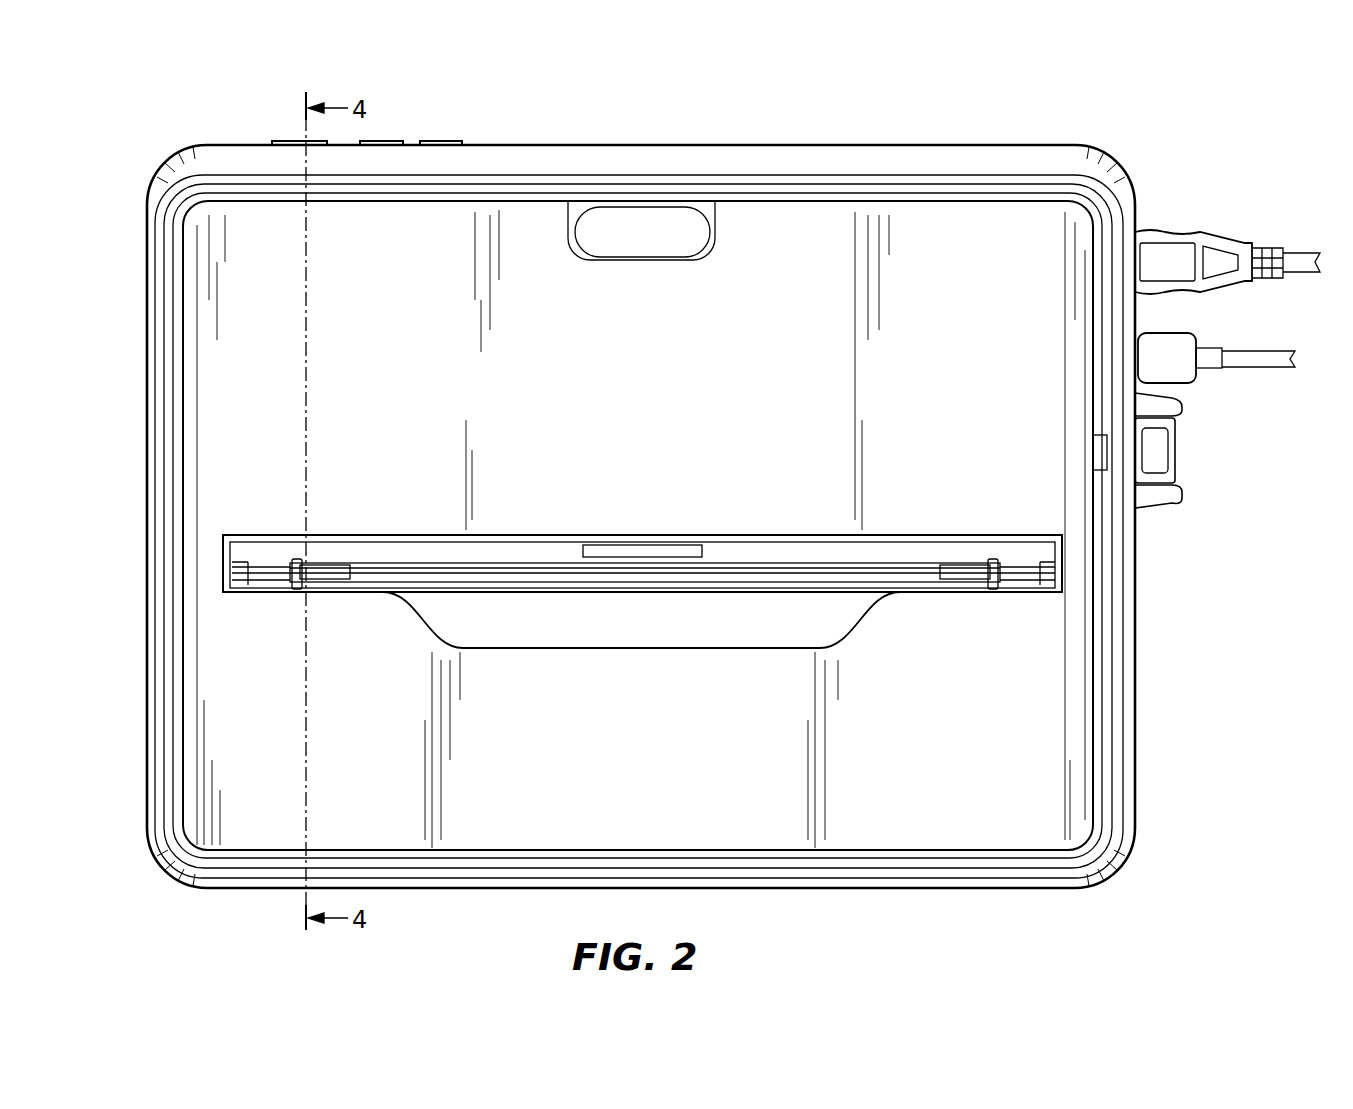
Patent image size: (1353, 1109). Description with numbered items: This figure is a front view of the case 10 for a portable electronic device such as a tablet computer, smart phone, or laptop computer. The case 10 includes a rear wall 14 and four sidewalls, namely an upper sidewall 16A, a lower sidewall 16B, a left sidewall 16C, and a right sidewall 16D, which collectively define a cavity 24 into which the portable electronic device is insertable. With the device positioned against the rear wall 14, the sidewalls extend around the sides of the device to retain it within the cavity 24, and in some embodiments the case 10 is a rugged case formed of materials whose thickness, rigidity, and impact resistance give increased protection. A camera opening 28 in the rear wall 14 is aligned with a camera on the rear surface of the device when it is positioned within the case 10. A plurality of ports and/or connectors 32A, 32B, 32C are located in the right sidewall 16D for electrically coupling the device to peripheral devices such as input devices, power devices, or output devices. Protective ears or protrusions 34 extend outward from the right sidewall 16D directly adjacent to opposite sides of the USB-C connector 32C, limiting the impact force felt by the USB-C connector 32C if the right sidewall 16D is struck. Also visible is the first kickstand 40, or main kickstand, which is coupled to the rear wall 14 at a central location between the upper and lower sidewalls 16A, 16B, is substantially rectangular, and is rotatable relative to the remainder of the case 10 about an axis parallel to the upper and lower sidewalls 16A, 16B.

The case 10 is at (1117, 125).
The rear wall 14 is at (1030, 725).
The upper sidewall 16A is at (640, 143).
The lower sidewall 16B is at (735, 888).
The left sidewall 16C is at (142, 525).
The right sidewall 16D is at (1137, 590).
The cavity 24 is at (965, 268).
The camera opening 28 is at (663, 256).
The port or connector 32A is at (1140, 262).
The port or connector 32B is at (1140, 362).
The USB-C connector 32C is at (1160, 452).
The protective ears or protrusions 34 is at (1182, 405).
The first kickstand 40 is at (632, 585).